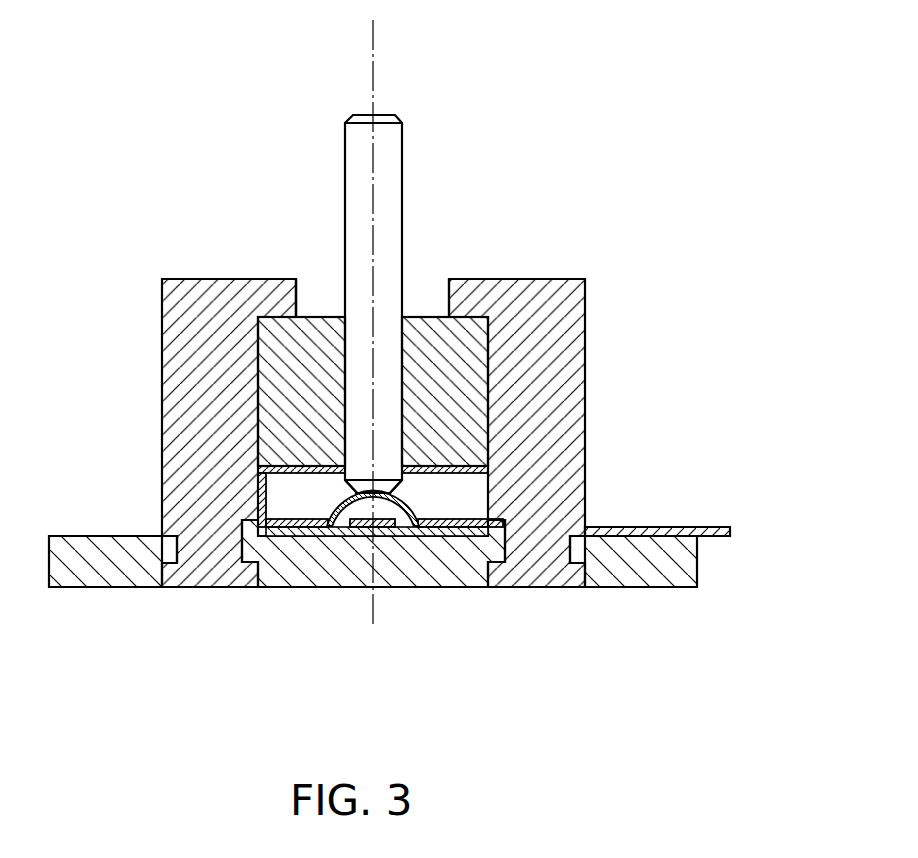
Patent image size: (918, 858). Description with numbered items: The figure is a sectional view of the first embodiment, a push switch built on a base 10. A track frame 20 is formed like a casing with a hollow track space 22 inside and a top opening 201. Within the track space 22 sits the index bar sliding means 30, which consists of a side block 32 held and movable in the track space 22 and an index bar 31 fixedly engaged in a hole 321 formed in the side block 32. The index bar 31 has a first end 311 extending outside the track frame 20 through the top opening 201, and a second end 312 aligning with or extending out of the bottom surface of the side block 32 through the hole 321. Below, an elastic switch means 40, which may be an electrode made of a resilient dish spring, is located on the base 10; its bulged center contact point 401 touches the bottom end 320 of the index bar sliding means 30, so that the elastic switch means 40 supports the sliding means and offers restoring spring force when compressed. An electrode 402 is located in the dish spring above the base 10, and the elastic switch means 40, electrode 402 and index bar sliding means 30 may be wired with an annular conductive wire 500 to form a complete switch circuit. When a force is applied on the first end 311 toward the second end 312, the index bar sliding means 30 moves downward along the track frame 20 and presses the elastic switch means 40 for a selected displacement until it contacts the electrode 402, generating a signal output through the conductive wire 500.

The base 10 is at (687, 565).
The track frame 20 is at (545, 368).
The top opening 201 is at (427, 290).
The track space 22 is at (293, 492).
The index bar sliding means 30 is at (268, 160).
The index bar 31 is at (387, 198).
The first end 311 is at (380, 113).
The second end 312 is at (383, 486).
The side block 32 is at (280, 360).
The bottom end 320 is at (345, 527).
The hole 321 is at (318, 303).
The elastic switch means 40 is at (325, 522).
The contact point 401 is at (390, 522).
The electrode 402 is at (378, 500).
The conductive wire 500 is at (250, 532).